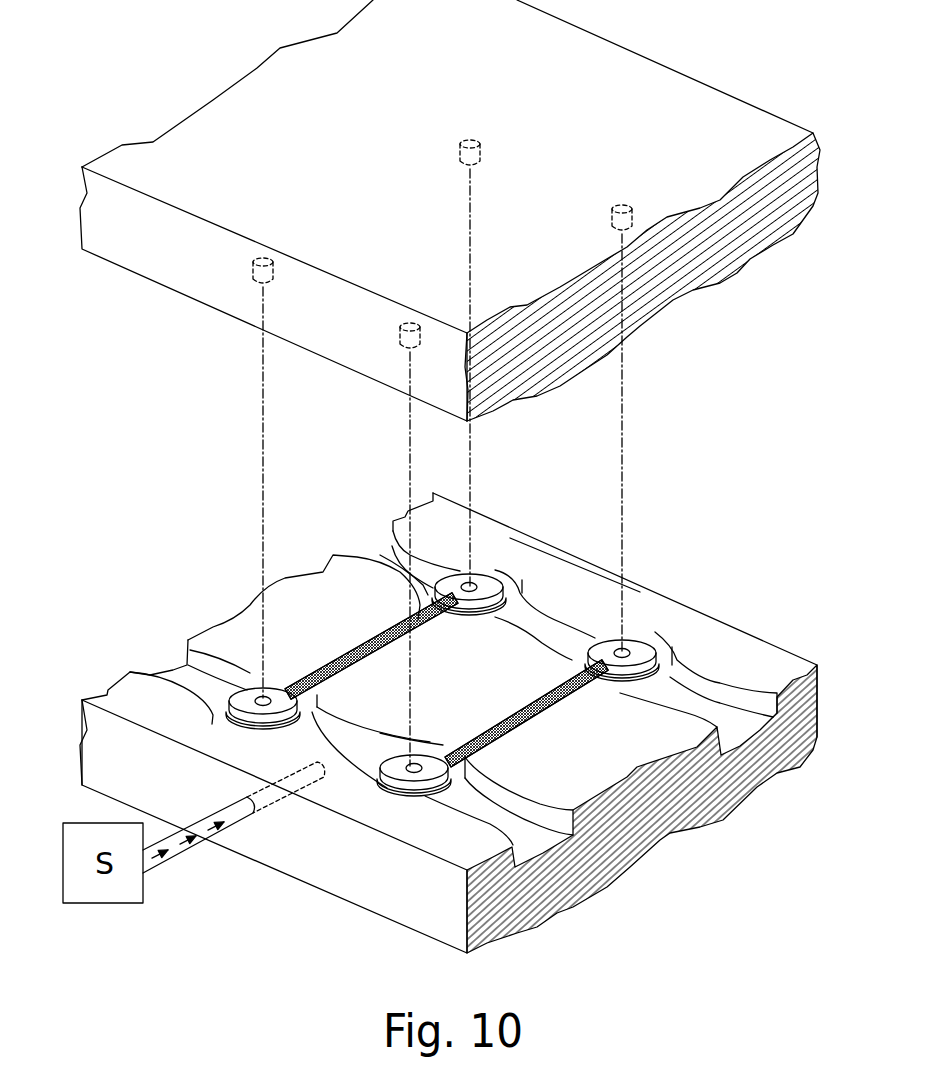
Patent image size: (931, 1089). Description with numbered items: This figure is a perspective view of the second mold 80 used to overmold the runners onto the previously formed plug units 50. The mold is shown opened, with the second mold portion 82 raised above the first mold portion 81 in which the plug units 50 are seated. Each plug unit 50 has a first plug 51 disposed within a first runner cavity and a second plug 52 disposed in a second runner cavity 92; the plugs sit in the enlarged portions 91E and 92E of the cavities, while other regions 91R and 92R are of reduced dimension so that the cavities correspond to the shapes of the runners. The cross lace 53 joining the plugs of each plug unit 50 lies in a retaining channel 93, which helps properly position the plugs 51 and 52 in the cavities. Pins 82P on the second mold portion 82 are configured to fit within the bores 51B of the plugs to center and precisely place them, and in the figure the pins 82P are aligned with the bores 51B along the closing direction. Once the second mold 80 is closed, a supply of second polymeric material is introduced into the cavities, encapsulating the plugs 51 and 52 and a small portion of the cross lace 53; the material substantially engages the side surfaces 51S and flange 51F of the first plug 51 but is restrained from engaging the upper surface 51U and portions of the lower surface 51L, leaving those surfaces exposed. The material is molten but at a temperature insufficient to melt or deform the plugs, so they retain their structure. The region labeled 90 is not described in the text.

The second mold 80 is at (172, 598).
The first mold portion 81 is at (95, 738).
The second mold portion 82 is at (80, 208).
The pins 82P is at (275, 277).
The plug units 50 is at (442, 666).
The first plug 51 is at (338, 734).
The upper surface 51U is at (242, 703).
The bores 51B is at (262, 707).
The flange 51F is at (243, 723).
The side surfaces 51S is at (247, 723).
The lower surface 51L is at (290, 733).
The second plug 52 is at (470, 585).
The cross lace 53 is at (355, 658).
The first rib set 90 is at (335, 717).
The enlarged portion 91E is at (213, 718).
The region of reduced dimension 91R is at (365, 726).
The second runner cavity 92 is at (532, 613).
The enlarged portion 92E is at (515, 577).
The region of reduced dimension 92R is at (578, 633).
The retaining channels 93 is at (367, 640).